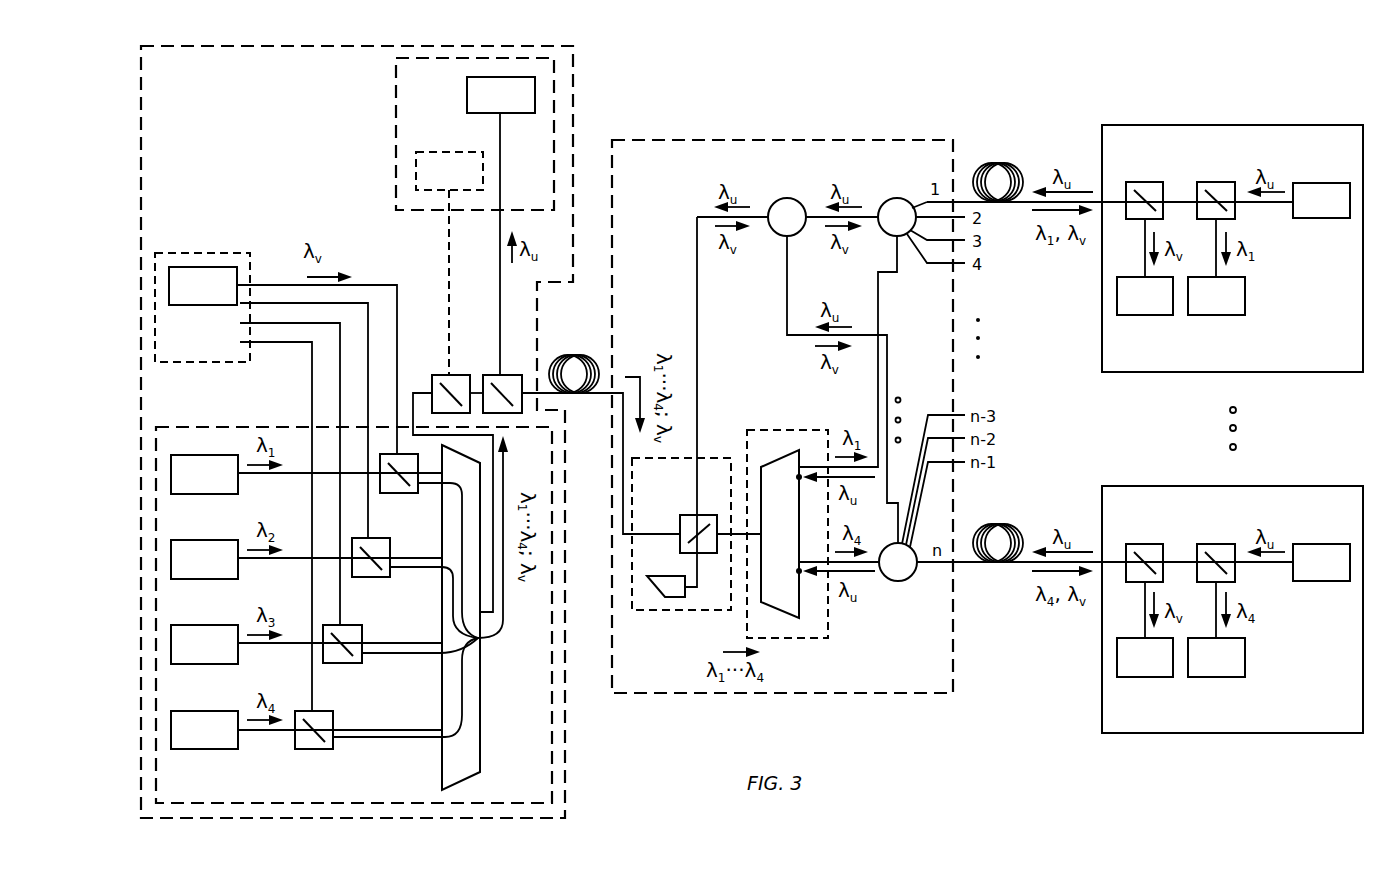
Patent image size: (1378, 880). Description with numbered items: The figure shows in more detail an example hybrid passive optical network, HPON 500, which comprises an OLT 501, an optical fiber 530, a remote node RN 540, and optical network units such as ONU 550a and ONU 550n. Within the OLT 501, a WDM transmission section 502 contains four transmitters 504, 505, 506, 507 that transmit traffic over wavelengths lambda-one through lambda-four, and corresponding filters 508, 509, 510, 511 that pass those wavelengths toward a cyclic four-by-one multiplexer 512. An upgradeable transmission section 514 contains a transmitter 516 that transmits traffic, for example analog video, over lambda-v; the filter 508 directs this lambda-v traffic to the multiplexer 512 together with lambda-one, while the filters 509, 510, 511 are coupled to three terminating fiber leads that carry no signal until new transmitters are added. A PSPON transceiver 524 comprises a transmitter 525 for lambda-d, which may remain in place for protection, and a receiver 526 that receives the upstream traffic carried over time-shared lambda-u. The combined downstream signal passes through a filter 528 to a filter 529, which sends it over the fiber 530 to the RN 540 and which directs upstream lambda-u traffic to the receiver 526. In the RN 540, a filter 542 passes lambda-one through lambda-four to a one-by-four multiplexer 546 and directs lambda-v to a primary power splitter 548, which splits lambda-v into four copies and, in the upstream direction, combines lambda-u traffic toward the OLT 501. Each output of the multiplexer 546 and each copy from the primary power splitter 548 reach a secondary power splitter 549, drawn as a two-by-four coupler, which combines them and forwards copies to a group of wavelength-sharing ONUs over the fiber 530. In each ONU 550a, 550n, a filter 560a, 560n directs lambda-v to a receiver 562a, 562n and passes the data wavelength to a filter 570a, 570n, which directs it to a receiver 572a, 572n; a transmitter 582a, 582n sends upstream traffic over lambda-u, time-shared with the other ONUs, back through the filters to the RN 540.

The HPON 500 is at (918, 738).
The OLT 501 is at (573, 95).
The WDM transmission section 502 is at (246, 426).
The transmitter 504 is at (238, 489).
The transmitter 505 is at (238, 574).
The transmitter 506 is at (238, 659).
The transmitter 507 is at (205, 749).
The filter 508 is at (402, 493).
The filter 509 is at (374, 577).
The filter 510 is at (348, 663).
The filter 511 is at (318, 749).
The multiplexer 512 is at (440, 768).
The upgradeable transmission section 514 is at (192, 252).
The transmitter 516 is at (207, 306).
The PSPON transceiver 524 is at (396, 134).
The transmitter 525 is at (440, 152).
The receiver 526 is at (466, 93).
The filter 528 is at (440, 375).
The filter 529 is at (491, 375).
The optical fiber 530 is at (574, 355).
The RN 540 is at (806, 140).
The filter 542 is at (692, 515).
The multiplexer 546 is at (771, 431).
The primary power splitter 548 is at (782, 199).
The secondary power splitter 549 is at (892, 199).
The ONU 550a is at (1102, 315).
The ONU 550n is at (1102, 676).
The filter 560a is at (1146, 181).
The filter 560n is at (1146, 543).
The receiver 562a is at (1153, 315).
The receiver 562n is at (1153, 677).
The filter 570a is at (1217, 181).
The filter 570n is at (1217, 543).
The receiver 572a is at (1226, 315).
The receiver 572n is at (1226, 677).
The transmitter 582a is at (1320, 218).
The transmitter 582n is at (1320, 581).